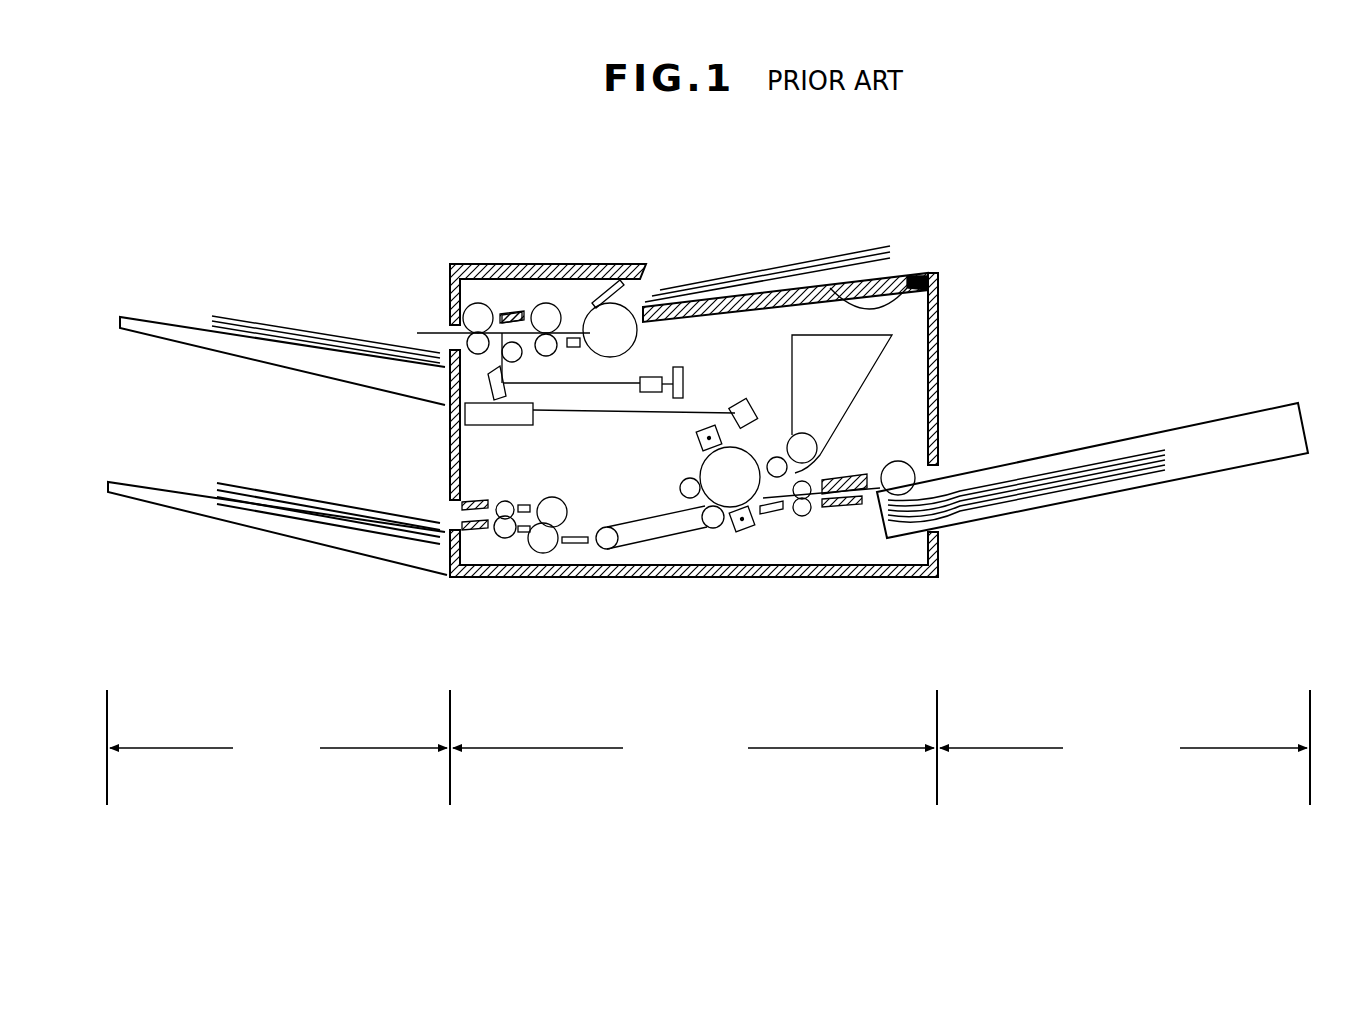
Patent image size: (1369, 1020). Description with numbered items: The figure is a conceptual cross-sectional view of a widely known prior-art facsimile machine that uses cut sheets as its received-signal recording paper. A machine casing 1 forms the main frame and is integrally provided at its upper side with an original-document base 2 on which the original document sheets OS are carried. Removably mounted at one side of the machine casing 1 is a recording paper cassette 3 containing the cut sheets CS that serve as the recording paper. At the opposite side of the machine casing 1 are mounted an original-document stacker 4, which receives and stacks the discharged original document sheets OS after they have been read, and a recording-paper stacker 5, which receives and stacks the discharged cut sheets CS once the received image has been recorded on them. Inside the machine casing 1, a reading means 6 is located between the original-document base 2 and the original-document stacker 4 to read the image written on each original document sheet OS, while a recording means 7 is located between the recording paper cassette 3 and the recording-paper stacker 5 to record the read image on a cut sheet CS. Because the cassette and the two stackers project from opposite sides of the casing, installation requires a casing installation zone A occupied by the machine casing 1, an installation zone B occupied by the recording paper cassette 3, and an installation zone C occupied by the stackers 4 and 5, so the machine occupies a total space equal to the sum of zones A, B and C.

The machine casing 1 is at (940, 358).
The original-document base 2 is at (916, 282).
The recording paper cassette 3 is at (1063, 507).
The original-document stacker 4 is at (243, 340).
The recording-paper stacker 5 is at (250, 520).
The reading means 6 is at (522, 298).
The recording means 7 is at (726, 541).
The original document sheets OS is at (770, 268).
The cut sheets CS is at (1077, 465).
The casing installation zone A is at (693, 754).
The installation zone B is at (1123, 754).
The installation zone C is at (278, 754).